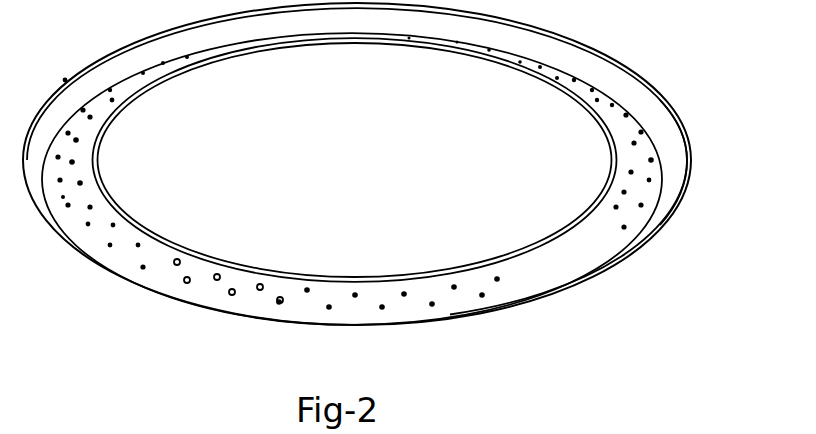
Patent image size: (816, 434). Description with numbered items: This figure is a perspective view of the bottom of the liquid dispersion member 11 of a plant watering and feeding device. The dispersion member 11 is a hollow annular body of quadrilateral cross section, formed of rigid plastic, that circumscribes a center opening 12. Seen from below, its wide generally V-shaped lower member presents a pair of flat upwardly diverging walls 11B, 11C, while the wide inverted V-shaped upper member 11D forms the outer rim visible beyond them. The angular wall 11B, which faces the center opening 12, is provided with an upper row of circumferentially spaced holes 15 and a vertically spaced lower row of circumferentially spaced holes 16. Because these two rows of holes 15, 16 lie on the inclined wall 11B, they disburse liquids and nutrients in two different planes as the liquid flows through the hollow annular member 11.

The liquid dispersion member 11 is at (664, 227).
The upwardly diverging wall 11B is at (120, 263).
The upwardly diverging wall 11C is at (678, 149).
The upper member 11D is at (126, 51).
The center opening 12 is at (370, 177).
The upper row of holes 15 is at (258, 284).
The lower row of holes 16 is at (277, 302).